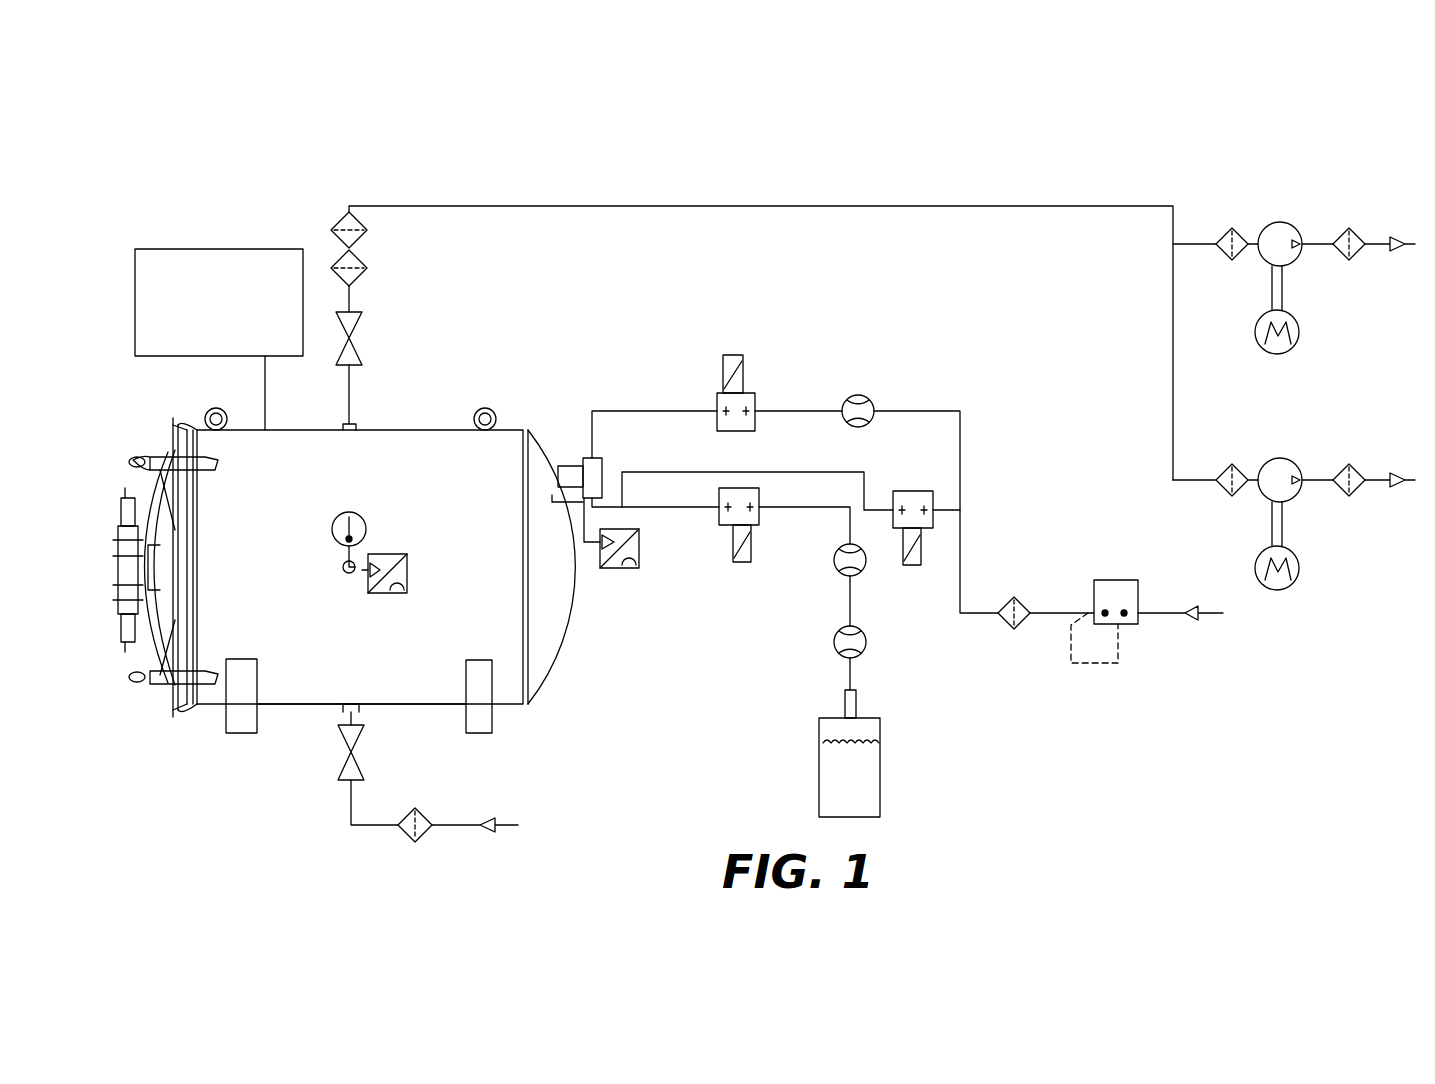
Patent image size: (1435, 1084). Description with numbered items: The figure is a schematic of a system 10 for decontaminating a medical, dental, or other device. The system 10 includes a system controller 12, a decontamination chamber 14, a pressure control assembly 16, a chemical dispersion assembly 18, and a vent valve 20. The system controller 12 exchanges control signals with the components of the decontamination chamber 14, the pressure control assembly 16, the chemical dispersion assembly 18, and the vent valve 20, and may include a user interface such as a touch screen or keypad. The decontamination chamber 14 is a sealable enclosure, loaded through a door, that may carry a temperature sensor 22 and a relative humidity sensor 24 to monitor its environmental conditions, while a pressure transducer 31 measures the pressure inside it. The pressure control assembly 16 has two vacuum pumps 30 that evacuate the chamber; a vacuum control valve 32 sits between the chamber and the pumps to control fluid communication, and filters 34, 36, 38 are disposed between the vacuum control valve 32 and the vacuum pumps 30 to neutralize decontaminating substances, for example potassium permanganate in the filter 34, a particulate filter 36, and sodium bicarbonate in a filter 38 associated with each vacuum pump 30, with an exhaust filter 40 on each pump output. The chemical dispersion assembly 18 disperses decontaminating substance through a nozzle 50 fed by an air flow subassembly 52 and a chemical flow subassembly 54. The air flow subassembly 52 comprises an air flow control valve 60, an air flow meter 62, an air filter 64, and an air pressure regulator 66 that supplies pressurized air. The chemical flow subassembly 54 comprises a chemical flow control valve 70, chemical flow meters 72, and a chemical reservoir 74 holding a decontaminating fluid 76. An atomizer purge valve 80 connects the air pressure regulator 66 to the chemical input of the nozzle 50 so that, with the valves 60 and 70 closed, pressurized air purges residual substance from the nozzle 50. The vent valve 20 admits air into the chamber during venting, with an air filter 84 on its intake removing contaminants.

The system 10 is at (188, 188).
The system controller 12 is at (135, 300).
The decontamination chamber 14 is at (344, 545).
The pressure control assembly 16 is at (1355, 192).
The chemical dispersion assembly 18 is at (1022, 718).
The vent valve 20 is at (338, 773).
The temperature sensor 22 is at (366, 522).
The relative humidity sensor 24 is at (407, 566).
The vacuum pump 30 is at (1283, 212).
The pressure transducer 31 is at (610, 570).
The vacuum control valve 32 is at (360, 325).
The filter 34 is at (366, 264).
The filter 36 is at (333, 222).
The filter 38 is at (1230, 228).
The exhaust filter 40 is at (1355, 262).
The nozzle 50 is at (565, 440).
The air flow subassembly 52 is at (662, 355).
The chemical flow subassembly 54 is at (712, 547).
The air flow control valve 60 is at (755, 392).
The air flow meter 62 is at (873, 400).
The air filter 64 is at (1020, 600).
The air pressure regulator 66 is at (1132, 580).
The chemical flow control valve 70 is at (752, 518).
The chemical flow meters 72 is at (866, 560).
The chemical reservoir 74 is at (844, 752).
The decontaminating fluid 76 is at (865, 763).
The atomizer purge valve 80 is at (905, 490).
The air filter 84 is at (420, 808).